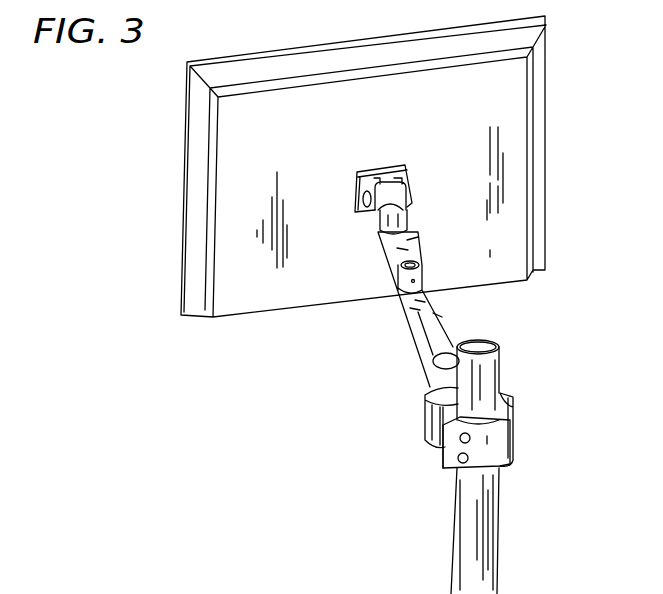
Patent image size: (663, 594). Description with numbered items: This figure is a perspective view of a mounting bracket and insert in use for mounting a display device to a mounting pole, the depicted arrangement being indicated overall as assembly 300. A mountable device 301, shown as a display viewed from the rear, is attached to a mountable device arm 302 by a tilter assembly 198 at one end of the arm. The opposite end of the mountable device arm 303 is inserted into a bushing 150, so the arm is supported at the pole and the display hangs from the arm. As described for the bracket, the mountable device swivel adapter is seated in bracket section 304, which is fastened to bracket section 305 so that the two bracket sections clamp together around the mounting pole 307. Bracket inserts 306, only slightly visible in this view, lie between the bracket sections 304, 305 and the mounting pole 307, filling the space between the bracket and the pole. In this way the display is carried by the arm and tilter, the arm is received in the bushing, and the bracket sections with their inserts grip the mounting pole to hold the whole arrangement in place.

The display mounting assembly 300 is at (372, 503).
The mountable device 301 is at (517, 103).
The tilter assembly 198 is at (408, 193).
The mountable device arm 302 is at (447, 328).
The bushing 150 is at (440, 356).
The mountable device arm 303 is at (433, 397).
The bracket section 304 is at (423, 430).
The bracket section 305 is at (496, 455).
The bracket inserts 306 is at (512, 426).
The mounting pole 307 is at (480, 542).